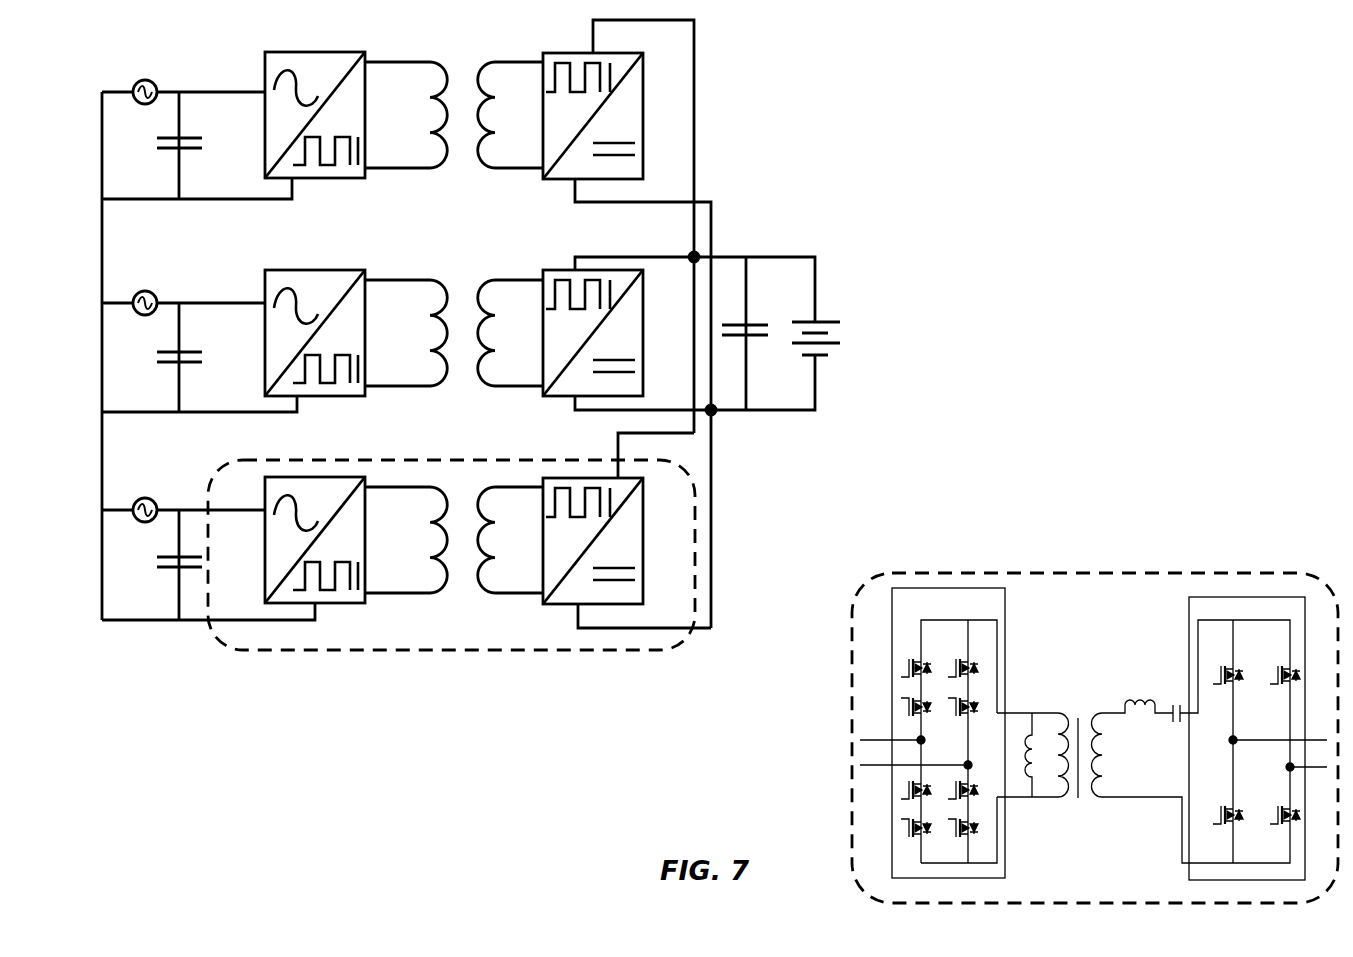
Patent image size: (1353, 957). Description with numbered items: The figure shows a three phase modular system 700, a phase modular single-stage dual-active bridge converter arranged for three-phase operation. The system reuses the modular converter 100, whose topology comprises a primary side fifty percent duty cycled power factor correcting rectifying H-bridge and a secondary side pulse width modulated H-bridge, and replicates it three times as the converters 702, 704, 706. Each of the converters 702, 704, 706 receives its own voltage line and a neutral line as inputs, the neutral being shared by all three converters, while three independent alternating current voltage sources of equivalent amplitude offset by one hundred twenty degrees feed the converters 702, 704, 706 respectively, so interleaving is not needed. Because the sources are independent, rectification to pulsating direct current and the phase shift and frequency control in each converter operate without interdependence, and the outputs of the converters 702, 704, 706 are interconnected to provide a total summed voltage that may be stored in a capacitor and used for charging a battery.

The three phase modular system 700 is at (696, 335).
The converter 702 is at (717, 102).
The converter 704 is at (736, 241).
The converter 706 is at (719, 539).
The modular converter 100 is at (1082, 572).